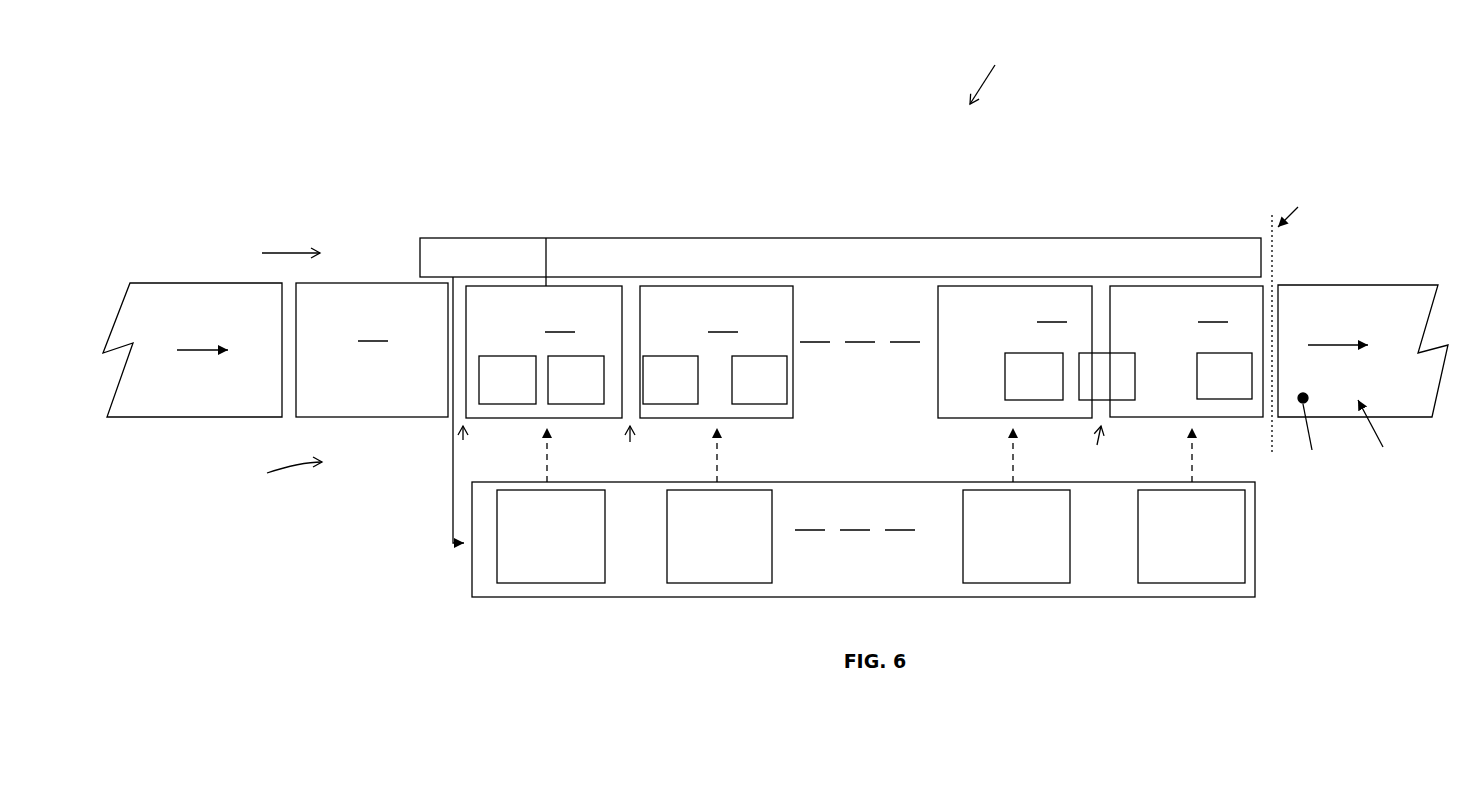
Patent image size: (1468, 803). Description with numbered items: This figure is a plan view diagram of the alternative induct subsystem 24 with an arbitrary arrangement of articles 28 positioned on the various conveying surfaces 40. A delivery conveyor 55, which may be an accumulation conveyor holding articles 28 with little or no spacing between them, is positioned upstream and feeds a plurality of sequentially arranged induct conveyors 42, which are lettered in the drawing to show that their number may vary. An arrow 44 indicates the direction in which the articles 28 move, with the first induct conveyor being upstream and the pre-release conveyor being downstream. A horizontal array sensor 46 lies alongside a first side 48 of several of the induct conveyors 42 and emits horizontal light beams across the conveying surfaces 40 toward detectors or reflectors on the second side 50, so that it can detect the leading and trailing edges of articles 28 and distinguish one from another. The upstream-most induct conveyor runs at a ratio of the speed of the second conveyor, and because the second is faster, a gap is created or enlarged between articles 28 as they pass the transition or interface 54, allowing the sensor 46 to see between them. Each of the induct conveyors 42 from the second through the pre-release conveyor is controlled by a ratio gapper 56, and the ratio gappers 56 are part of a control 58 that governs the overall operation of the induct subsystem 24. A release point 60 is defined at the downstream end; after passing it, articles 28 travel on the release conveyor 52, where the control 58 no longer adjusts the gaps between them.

The induct subsystem 24 is at (1061, 14).
The article 28 is at (479, 370).
The conveying surface 40 is at (793, 321).
The induct conveyor 42 is at (373, 283).
The arrow 44 is at (196, 358).
The horizontal array sensor 46 is at (629, 238).
The first side 48 is at (266, 254).
The second side 50 is at (267, 481).
The release conveyor 52 is at (1368, 283).
The transition or interface 54 is at (466, 424).
The delivery conveyor 55 is at (157, 300).
The ratio gapper 56 is at (543, 583).
The control 58 is at (1132, 604).
The release point 60 is at (1272, 455).